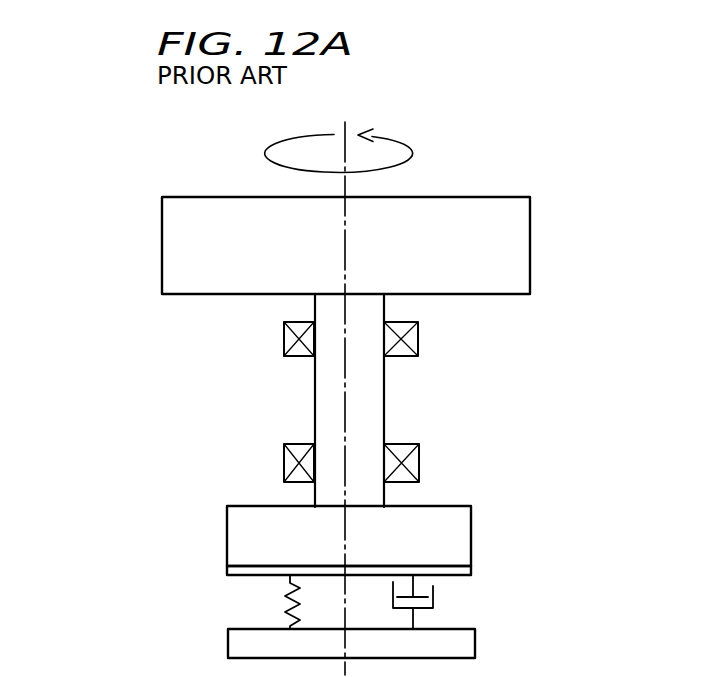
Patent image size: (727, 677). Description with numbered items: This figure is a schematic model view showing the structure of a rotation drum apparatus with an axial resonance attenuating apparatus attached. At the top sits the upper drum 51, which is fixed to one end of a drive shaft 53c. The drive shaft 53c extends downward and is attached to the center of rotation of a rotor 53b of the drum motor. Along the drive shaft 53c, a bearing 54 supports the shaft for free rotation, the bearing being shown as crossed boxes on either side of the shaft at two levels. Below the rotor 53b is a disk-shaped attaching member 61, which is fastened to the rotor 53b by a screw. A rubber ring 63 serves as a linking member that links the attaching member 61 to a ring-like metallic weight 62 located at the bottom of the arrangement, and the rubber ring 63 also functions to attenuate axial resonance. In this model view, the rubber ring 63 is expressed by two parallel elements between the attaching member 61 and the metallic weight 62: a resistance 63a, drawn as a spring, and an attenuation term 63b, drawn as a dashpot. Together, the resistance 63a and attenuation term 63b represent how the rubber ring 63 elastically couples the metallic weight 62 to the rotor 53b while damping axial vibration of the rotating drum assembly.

The upper drum 51 is at (512, 237).
The drive shaft 53c is at (375, 398).
The bearing 54 is at (287, 342).
The rotor 53b is at (462, 518).
The attaching member 61 is at (472, 571).
The rubber ring 63 is at (236, 546).
The resistance 63a is at (283, 606).
The attenuation term 63b is at (395, 603).
The metallic weight 62 is at (229, 643).